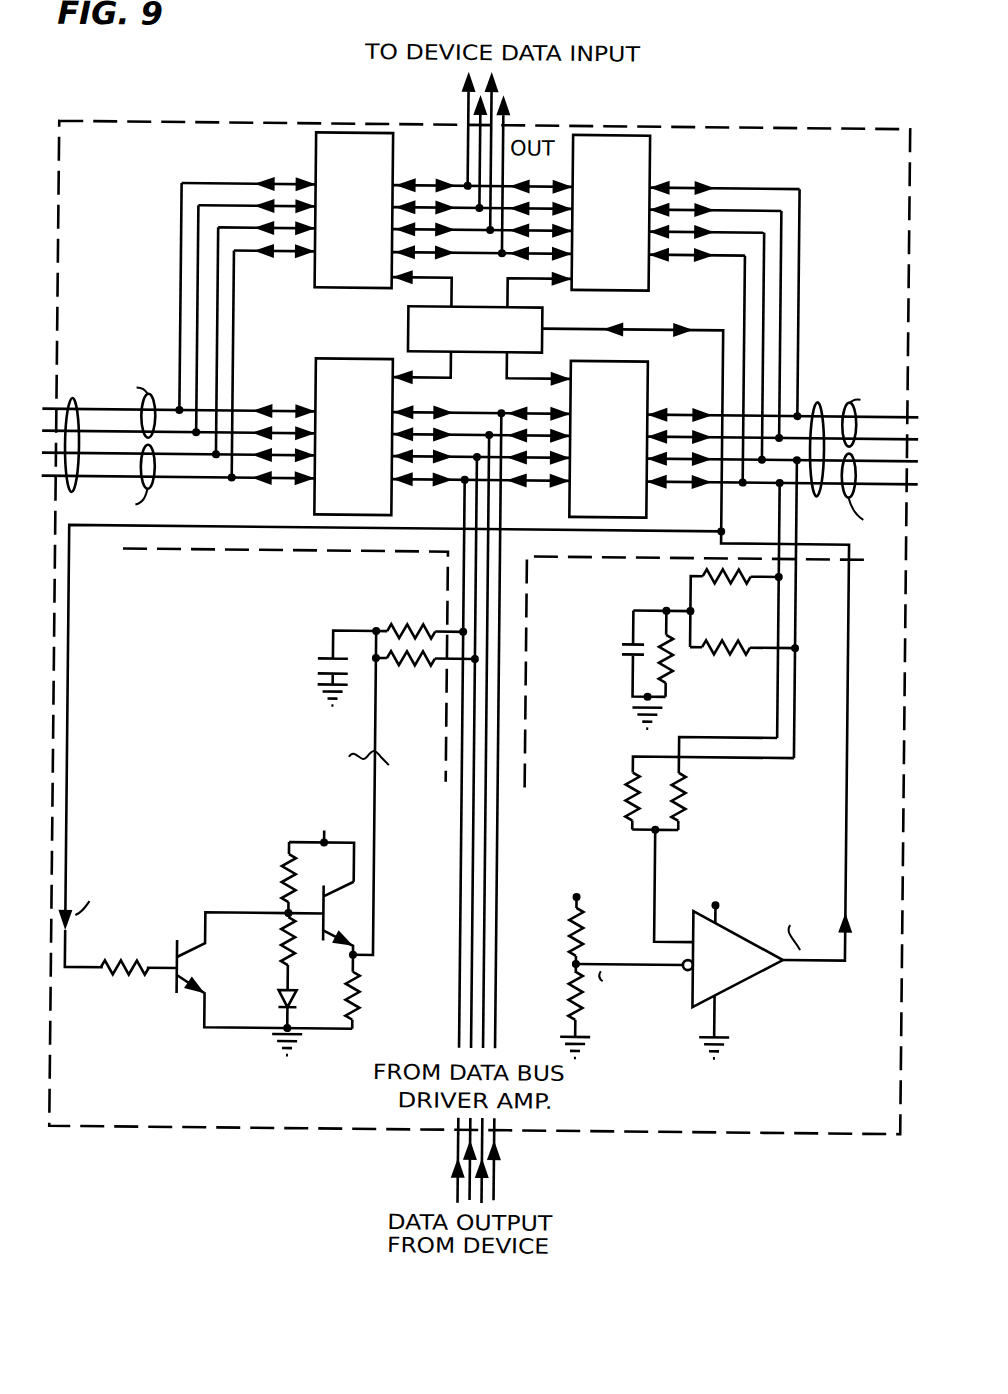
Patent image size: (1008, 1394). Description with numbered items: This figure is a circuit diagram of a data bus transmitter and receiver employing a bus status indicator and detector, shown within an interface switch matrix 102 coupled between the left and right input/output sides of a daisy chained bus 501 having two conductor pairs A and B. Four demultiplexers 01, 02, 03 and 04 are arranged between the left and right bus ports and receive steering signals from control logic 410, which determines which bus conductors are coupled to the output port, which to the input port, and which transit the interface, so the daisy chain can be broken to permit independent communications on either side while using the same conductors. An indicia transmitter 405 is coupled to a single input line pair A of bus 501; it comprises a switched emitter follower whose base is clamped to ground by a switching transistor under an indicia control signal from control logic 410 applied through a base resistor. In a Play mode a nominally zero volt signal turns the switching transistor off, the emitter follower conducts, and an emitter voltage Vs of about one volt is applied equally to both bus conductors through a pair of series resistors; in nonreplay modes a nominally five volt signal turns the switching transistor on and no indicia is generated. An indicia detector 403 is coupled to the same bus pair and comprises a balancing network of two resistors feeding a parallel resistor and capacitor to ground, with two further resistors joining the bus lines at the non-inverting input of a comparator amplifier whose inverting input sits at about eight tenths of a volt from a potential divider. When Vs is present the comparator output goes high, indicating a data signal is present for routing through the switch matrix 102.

The interface switch matrix 102 is at (757, 125).
The demultiplexer 01 is at (311, 157).
The demultiplexer 02 is at (645, 157).
The demultiplexer 03 is at (313, 382).
The demultiplexer 04 is at (645, 389).
The control logic 410 is at (405, 337).
The daisy chained bus 501 is at (70, 401).
The indicia transmitter 405 is at (188, 587).
The indicia detector 403 is at (586, 595).